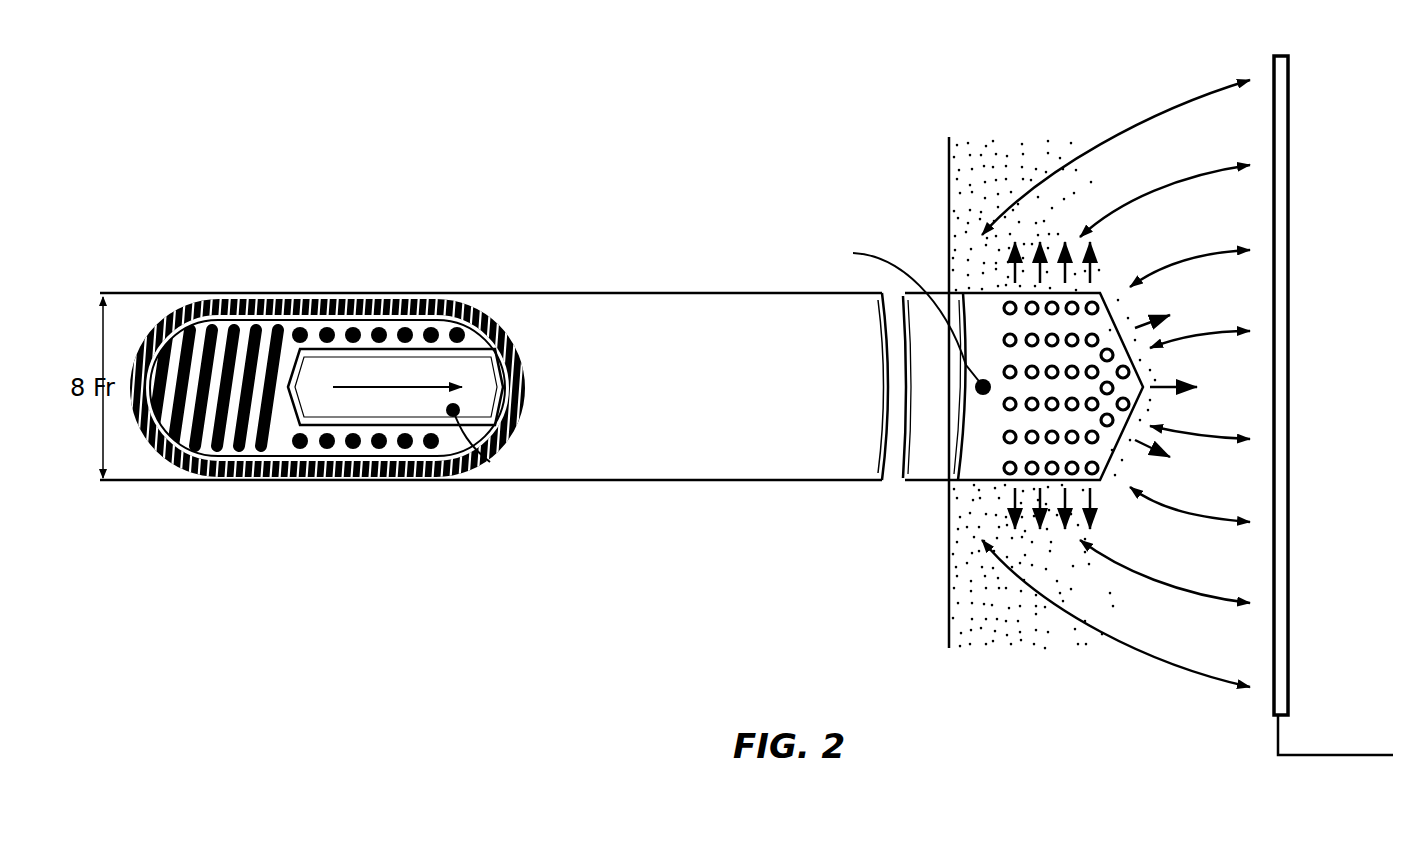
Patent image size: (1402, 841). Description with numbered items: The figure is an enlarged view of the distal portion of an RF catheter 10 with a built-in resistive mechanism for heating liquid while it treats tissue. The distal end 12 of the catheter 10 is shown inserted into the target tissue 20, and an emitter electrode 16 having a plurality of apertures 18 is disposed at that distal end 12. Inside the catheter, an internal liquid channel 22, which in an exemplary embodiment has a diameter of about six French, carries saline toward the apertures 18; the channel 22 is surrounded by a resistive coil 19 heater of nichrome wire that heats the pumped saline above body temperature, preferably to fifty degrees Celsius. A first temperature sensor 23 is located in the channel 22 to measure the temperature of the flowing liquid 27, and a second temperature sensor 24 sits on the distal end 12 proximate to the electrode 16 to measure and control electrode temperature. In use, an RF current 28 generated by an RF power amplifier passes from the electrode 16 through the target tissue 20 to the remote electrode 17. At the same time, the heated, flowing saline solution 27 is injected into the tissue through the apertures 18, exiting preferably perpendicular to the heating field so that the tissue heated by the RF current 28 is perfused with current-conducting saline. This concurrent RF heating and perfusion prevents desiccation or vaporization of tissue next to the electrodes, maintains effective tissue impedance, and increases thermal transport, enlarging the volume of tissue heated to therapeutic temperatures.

The catheter 10 is at (545, 293).
The distal end 12 is at (920, 482).
The emitter electrode 16 is at (1100, 293).
The remote electrode 17 is at (1290, 549).
The apertures 18 is at (1000, 477).
The resistive coil heater 19 is at (182, 296).
The target tissue 20 is at (948, 249).
The internal liquid channel 22 is at (494, 297).
The first temperature sensor 23 is at (493, 469).
The second temperature sensor 24 is at (903, 314).
The heated flowing saline solution 27 is at (1094, 521).
The RF current 28 is at (1197, 514).